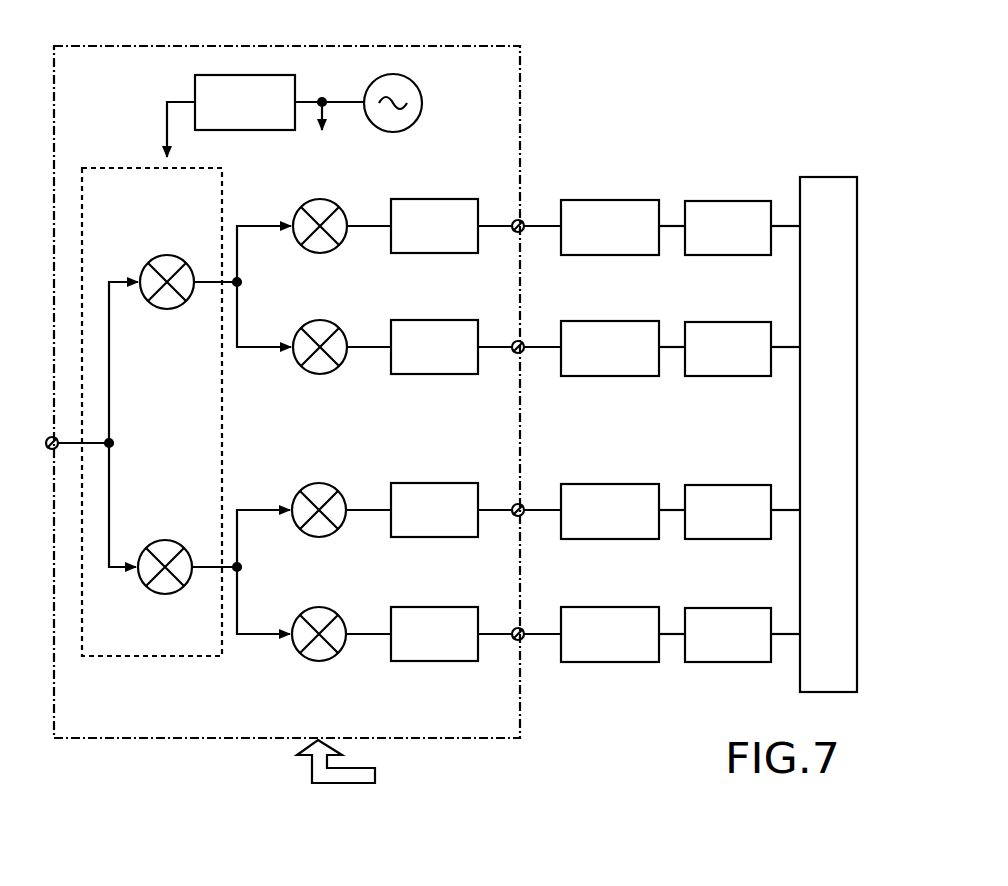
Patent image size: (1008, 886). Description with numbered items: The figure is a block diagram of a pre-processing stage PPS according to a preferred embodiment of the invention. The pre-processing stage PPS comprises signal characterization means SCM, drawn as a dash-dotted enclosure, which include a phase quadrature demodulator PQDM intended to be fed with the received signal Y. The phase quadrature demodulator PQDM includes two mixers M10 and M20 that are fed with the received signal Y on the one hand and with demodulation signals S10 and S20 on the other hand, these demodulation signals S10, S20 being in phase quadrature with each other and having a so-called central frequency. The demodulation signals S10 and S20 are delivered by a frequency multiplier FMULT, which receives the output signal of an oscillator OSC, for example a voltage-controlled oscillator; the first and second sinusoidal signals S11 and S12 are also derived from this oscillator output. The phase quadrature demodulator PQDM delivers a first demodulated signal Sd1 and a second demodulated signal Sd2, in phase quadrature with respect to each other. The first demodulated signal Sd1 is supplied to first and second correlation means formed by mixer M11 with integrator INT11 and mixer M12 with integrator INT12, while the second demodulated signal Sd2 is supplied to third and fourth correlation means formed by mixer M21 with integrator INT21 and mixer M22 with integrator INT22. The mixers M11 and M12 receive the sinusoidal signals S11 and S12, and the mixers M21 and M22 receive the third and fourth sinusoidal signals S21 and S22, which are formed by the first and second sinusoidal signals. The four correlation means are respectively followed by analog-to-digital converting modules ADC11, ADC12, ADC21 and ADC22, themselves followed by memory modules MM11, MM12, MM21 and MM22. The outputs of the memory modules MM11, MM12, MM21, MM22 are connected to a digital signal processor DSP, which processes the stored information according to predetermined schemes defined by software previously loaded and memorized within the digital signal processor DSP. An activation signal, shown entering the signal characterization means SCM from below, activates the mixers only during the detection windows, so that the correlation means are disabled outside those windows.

The signal characterization means SCM is at (521, 103).
The pre-processing stage PPS is at (790, 57).
The phase quadrature demodulator PQDM is at (107, 656).
The frequency multiplier FMULT is at (245, 102).
The oscillator OSC is at (417, 124).
The digital signal processor DSP is at (828, 177).
The mixer M10 is at (171, 308).
The mixer M20 is at (169, 593).
The mixer of first correlation means M11 is at (345, 214).
The mixer of second correlation means M12 is at (343, 365).
The mixer of third correlation means M21 is at (344, 498).
The mixer of fourth correlation means M22 is at (342, 652).
The first demodulation signal S10 is at (167, 253).
The first sinusoidal signal S11 is at (321, 197).
The second sinusoidal signal S12 is at (320, 318).
The second demodulation signal S20 is at (165, 538).
The third sinusoidal signal S21 is at (319, 481).
The fourth sinusoidal signal S22 is at (319, 605).
The first demodulated signal Sd1 is at (255, 206).
The second demodulated signal Sd2 is at (255, 488).
The received signal Y is at (42, 436).
The integrator of first correlation means INT11 is at (434, 226).
The integrator of second correlation means INT12 is at (434, 347).
The integrator of third correlation means INT21 is at (434, 510).
The integrator of fourth correlation means INT22 is at (434, 634).
The first analog-to-digital converting module ADC11 is at (610, 227).
The second analog-to-digital converting module ADC12 is at (610, 348).
The third analog-to-digital converting module ADC21 is at (610, 511).
The fourth analog-to-digital converting module ADC22 is at (610, 634).
The first memory module MM11 is at (728, 228).
The second memory module MM12 is at (728, 349).
The third memory module MM21 is at (728, 512).
The fourth memory module MM22 is at (728, 635).